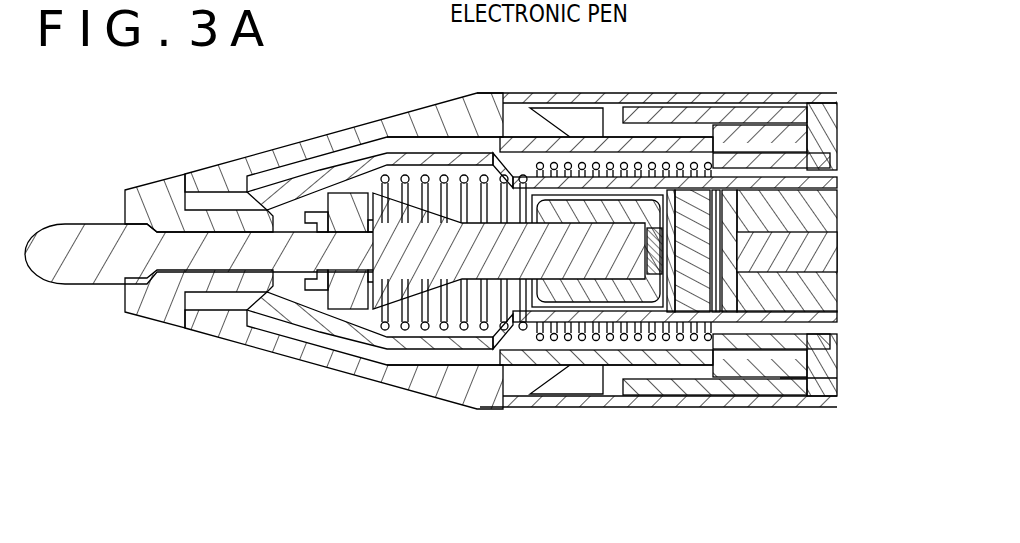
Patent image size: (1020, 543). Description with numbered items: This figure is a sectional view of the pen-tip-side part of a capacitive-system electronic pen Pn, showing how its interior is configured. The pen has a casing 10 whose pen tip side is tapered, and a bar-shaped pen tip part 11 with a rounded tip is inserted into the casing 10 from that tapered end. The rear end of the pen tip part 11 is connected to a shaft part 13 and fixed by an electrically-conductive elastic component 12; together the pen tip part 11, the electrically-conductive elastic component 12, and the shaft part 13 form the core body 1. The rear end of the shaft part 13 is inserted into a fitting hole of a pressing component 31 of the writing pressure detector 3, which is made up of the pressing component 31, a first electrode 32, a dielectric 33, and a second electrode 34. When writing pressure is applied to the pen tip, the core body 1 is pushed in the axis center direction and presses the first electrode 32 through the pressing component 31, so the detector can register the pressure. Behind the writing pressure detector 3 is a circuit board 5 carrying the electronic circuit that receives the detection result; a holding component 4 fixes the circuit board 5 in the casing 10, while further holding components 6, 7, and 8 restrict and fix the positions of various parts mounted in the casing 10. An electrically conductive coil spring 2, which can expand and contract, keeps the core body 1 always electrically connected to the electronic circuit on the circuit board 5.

The electronic pen Pn is at (438, 25).
The casing 10 is at (291, 135).
The pen tip part 11 is at (298, 262).
The electrically-conductive elastic component 12 is at (350, 310).
The shaft part 13 is at (397, 288).
The core body 1 is at (253, 450).
The coil spring 2 is at (428, 168).
The holding component 6 is at (507, 147).
The holding component 7 is at (658, 176).
The holding component 4 is at (759, 205).
The circuit board 5 is at (822, 250).
The holding component 8 is at (823, 378).
The pressing component 31 is at (620, 292).
The first electrode 32 is at (670, 314).
The dielectric 33 is at (690, 300).
The second electrode 34 is at (728, 312).
The writing pressure detector 3 is at (760, 456).